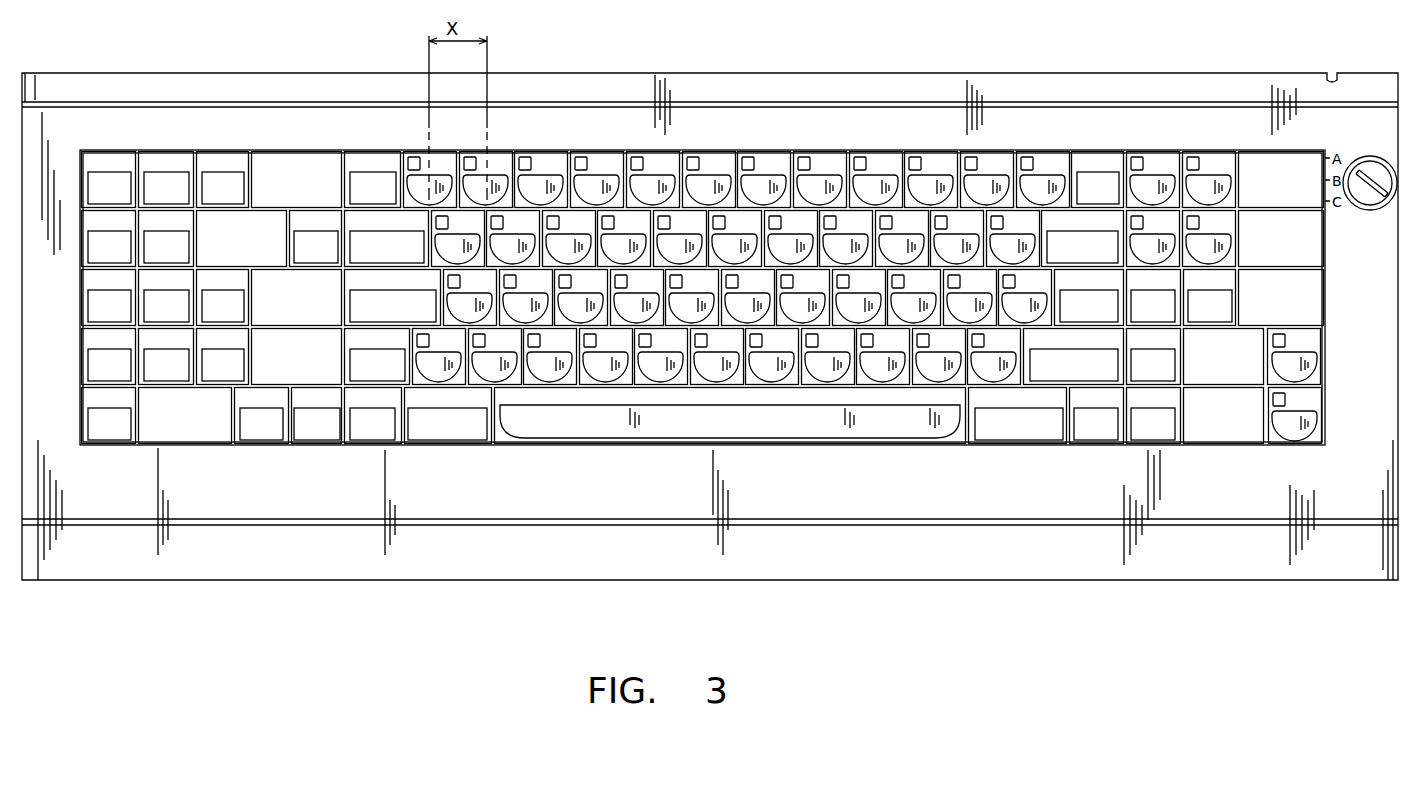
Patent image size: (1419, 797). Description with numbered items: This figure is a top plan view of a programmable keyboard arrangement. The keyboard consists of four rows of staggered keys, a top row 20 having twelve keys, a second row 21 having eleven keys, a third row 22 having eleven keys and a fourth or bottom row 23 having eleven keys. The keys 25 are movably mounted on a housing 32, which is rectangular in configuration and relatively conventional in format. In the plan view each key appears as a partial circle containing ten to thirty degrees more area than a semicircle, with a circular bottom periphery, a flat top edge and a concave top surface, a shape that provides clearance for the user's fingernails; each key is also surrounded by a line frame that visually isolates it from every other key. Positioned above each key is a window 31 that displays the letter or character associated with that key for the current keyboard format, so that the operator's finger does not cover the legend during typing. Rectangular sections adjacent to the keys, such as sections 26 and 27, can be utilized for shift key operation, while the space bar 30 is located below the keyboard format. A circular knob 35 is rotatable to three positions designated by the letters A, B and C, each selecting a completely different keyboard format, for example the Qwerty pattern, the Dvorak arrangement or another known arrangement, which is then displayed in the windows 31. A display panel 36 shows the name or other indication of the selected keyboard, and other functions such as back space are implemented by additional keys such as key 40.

The top row 20 is at (1050, 167).
The second row 21 is at (1034, 224).
The third row 22 is at (1043, 284).
The fourth row 23 is at (1016, 341).
The keys 25 is at (499, 185).
The rectangular section 26 is at (357, 343).
The rectangular section 27 is at (1173, 347).
The space bar 30 is at (943, 432).
The window 31 is at (440, 158).
The housing 32 is at (795, 73).
The circular knob 35 is at (1372, 200).
The display panel 36 is at (1305, 243).
The key 40 is at (1167, 158).